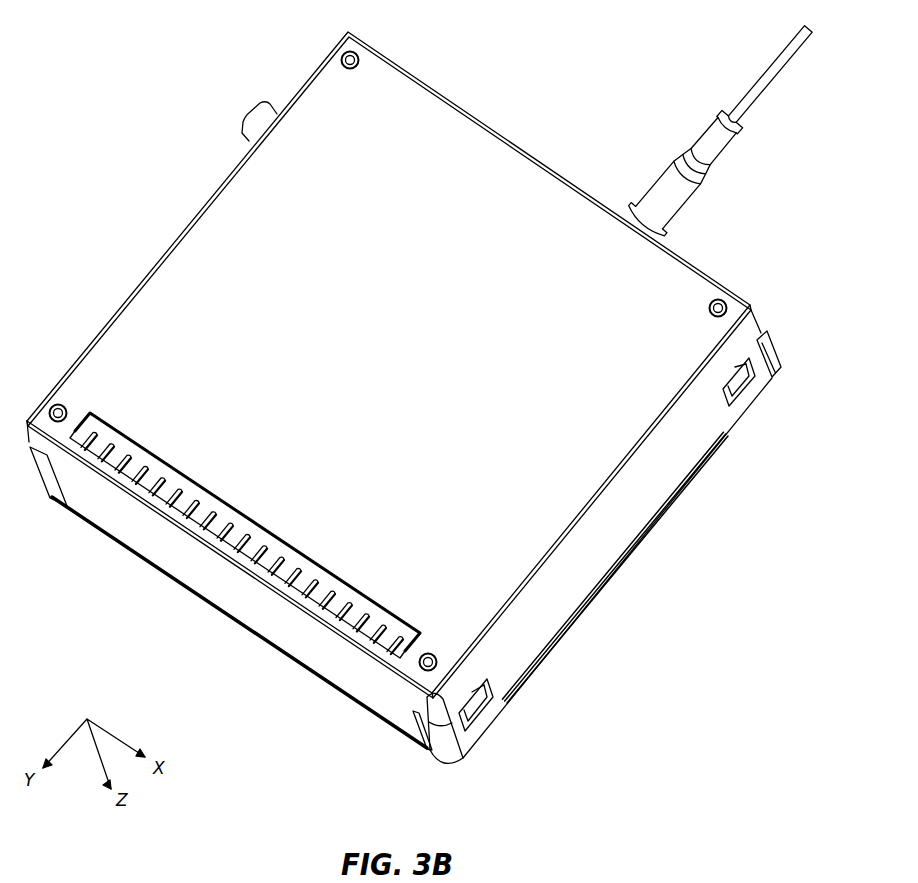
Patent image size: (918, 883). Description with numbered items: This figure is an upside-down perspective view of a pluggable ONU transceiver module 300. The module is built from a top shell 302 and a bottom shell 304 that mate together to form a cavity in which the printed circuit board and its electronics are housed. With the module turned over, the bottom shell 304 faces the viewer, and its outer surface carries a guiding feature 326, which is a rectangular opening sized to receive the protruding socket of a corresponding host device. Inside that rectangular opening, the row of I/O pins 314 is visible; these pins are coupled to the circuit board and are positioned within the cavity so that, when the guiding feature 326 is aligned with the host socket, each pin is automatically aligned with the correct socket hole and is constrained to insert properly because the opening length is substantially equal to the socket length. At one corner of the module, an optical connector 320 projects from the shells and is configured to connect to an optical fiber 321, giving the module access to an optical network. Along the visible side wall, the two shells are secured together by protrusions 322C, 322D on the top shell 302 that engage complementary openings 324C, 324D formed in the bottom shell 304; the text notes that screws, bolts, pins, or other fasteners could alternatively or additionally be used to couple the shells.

The pluggable ONU transceiver module 300 is at (128, 113).
The top shell 302 is at (768, 334).
The bottom shell 304 is at (671, 292).
The I/O pins 314 is at (90, 437).
The optical connector 320 is at (628, 210).
The optical fiber 321 is at (766, 73).
The protrusion 322C is at (752, 392).
The protrusion 322D is at (482, 717).
The opening 324C is at (722, 377).
The opening 324D is at (474, 683).
The guiding feature 326 is at (73, 432).